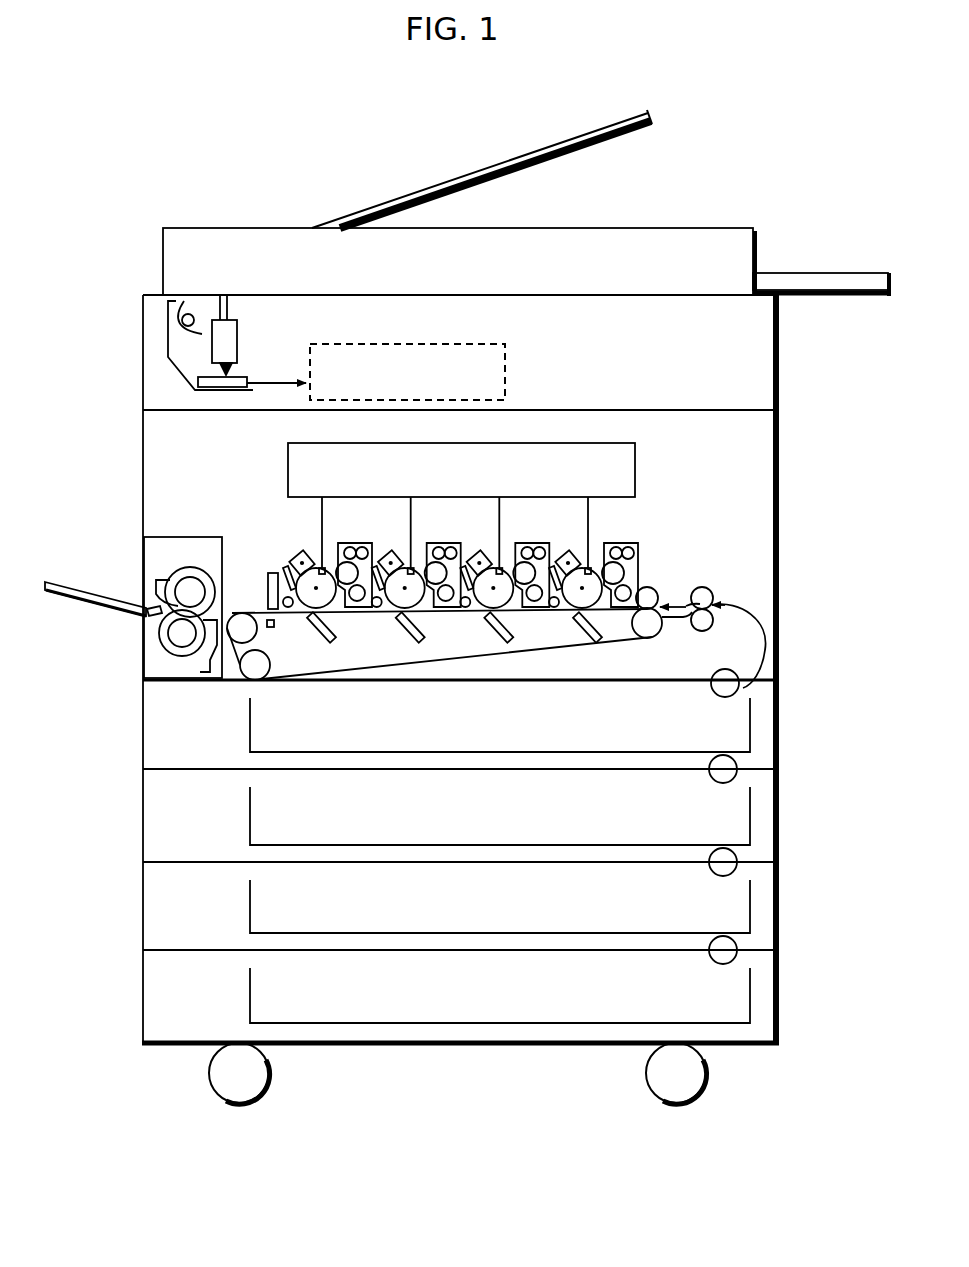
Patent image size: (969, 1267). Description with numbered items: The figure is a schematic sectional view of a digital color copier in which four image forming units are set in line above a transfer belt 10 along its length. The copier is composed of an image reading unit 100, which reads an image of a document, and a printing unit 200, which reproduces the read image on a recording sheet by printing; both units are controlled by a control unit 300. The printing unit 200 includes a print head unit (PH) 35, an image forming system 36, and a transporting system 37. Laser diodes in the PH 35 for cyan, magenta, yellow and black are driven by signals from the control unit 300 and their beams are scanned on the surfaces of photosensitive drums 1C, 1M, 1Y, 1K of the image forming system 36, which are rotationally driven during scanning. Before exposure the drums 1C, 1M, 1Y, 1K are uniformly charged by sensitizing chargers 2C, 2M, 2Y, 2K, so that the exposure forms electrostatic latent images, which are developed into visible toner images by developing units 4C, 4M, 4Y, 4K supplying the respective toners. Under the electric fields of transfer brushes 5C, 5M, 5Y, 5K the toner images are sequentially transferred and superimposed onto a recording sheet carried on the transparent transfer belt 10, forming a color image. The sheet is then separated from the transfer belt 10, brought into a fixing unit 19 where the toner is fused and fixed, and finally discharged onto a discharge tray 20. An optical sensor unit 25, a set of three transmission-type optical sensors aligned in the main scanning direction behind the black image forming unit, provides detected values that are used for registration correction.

The image reading unit 100 is at (127, 386).
The printing unit 200 is at (127, 522).
The control unit 300 is at (502, 346).
The discharge tray 20 is at (86, 607).
The fixing unit 19 is at (165, 536).
The optical sensor unit 25 is at (268, 580).
The print head unit (PH) 35 is at (288, 478).
The image forming system 36 is at (678, 558).
The transporting system 37 is at (623, 654).
The transfer belt 10 is at (420, 662).
The photosensitive drum (K) 1K is at (331, 601).
The photosensitive drum (Y) 1Y is at (420, 601).
The photosensitive drum (M) 1M is at (508, 601).
The photosensitive drum (C) 1C is at (599, 603).
The sensitizing charger (K) 2K is at (297, 556).
The sensitizing charger (Y) 2Y is at (394, 556).
The sensitizing charger (M) 2M is at (483, 556).
The sensitizing charger (C) 2C is at (571, 556).
The developing unit (K) 4K is at (347, 542).
The developing unit (Y) 4Y is at (438, 542).
The developing unit (M) 4M is at (518, 542).
The developing unit (C) 4C is at (630, 542).
The transfer brush (K) 5K is at (321, 638).
The transfer brush (Y) 5Y is at (406, 640).
The transfer brush (M) 5M is at (506, 646).
The transfer brush (C) 5C is at (594, 646).